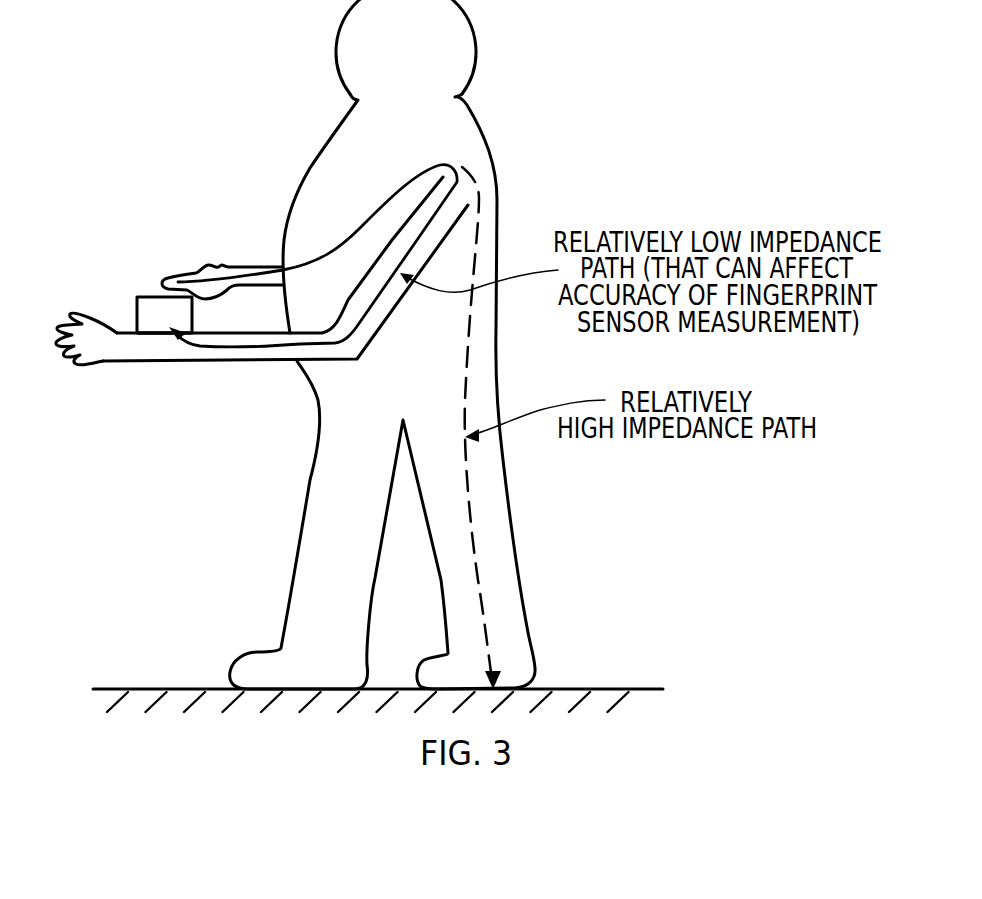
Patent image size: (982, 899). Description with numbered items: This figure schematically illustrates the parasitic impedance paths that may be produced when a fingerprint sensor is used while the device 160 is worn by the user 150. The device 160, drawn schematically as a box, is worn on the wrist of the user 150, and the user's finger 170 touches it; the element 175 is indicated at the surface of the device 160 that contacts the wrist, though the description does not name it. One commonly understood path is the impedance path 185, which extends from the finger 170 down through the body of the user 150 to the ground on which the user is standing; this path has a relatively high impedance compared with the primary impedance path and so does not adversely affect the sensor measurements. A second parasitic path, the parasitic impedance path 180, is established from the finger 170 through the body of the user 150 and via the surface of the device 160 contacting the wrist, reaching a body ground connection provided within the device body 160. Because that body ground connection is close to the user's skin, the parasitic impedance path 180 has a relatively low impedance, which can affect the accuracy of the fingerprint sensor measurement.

The user 150 is at (490, 133).
The device 160 is at (137, 317).
The finger 170 is at (180, 277).
The fingerprint sensor / contact 175 is at (147, 337).
The parasitic impedance path 180 is at (458, 186).
The impedance path 185 is at (477, 545).